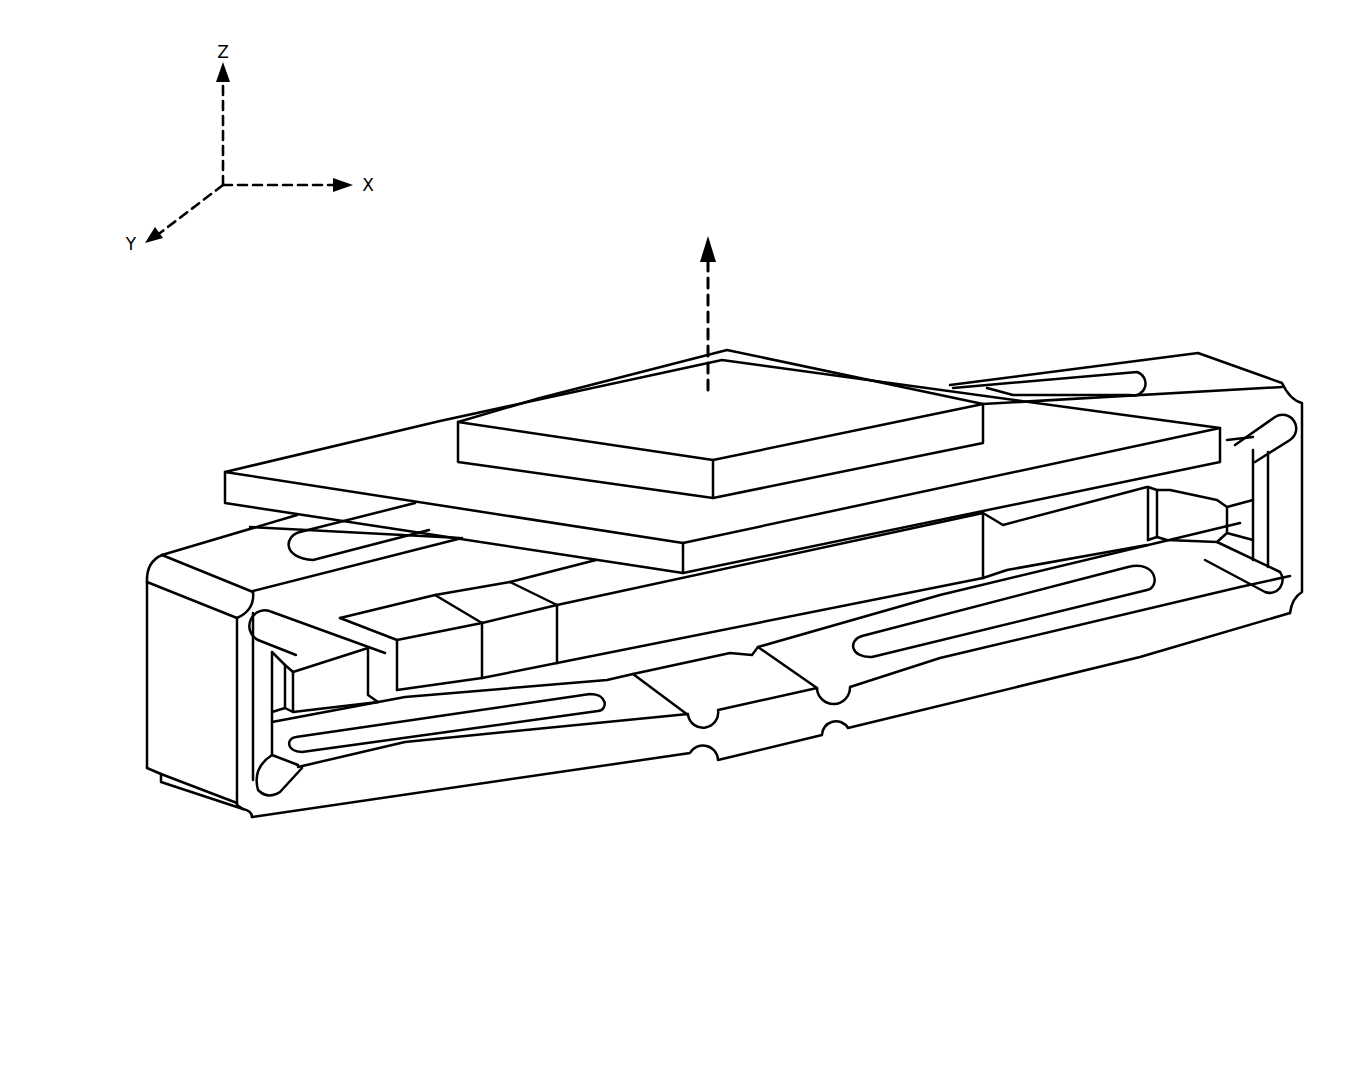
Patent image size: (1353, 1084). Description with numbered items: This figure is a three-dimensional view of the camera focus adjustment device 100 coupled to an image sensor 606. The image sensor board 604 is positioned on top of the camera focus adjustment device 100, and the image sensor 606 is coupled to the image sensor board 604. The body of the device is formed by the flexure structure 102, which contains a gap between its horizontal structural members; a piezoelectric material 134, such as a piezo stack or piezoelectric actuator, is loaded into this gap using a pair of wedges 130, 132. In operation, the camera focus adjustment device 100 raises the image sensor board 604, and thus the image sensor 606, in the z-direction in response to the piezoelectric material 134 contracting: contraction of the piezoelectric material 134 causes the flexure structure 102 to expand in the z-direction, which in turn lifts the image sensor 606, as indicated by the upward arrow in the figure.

The camera focus adjustment device 100 is at (701, 647).
The flexure structure 102 is at (310, 798).
The wedge 130 is at (429, 660).
The wedge 132 is at (518, 652).
The piezoelectric material 134 is at (679, 625).
The image sensor board 604 is at (365, 468).
The image sensor 606 is at (570, 414).